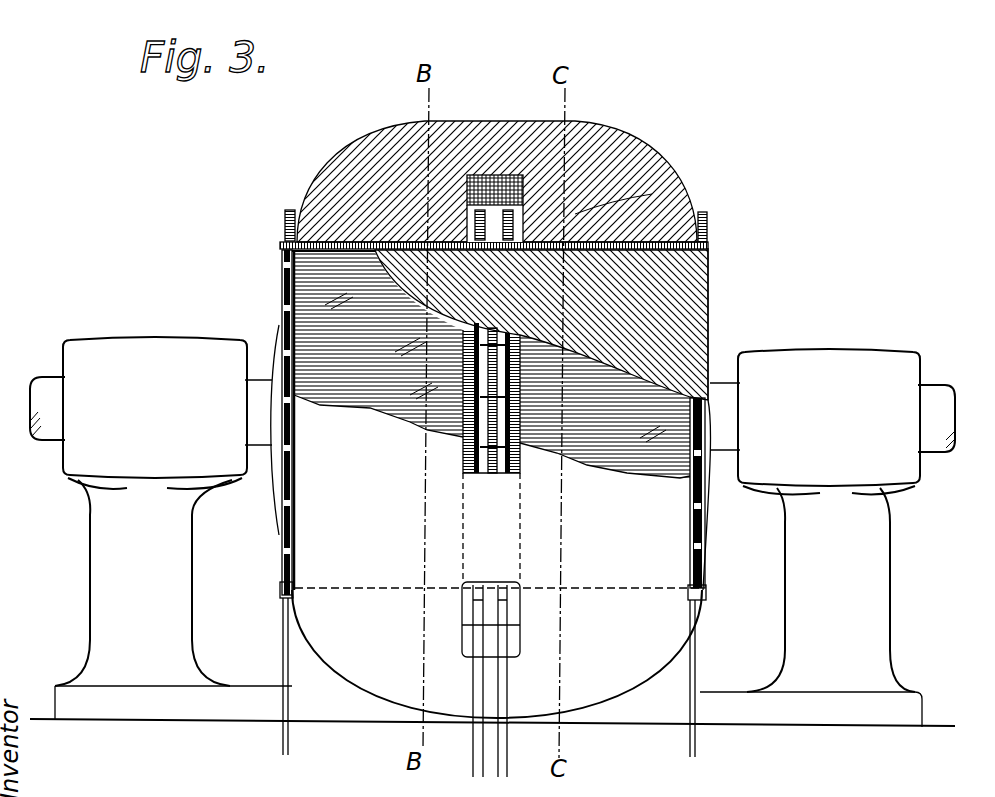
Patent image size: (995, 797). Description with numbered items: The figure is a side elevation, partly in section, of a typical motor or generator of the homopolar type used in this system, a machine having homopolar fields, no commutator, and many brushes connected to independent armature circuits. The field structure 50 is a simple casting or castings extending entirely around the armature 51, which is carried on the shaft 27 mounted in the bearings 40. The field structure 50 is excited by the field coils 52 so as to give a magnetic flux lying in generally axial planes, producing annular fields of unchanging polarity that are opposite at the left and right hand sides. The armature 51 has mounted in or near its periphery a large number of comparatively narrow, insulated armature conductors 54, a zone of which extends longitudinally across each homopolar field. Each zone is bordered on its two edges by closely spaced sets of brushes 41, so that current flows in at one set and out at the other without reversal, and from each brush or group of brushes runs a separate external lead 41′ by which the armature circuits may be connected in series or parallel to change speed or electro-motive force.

The shaft 27 is at (47, 390).
The bearings 40 is at (130, 352).
The brushes 41 is at (708, 246).
The external lead 41′ is at (477, 240).
The field structure 50 is at (606, 152).
The armature 51 is at (292, 288).
The field coils 52 is at (510, 176).
The armature conductors 54 is at (683, 273).